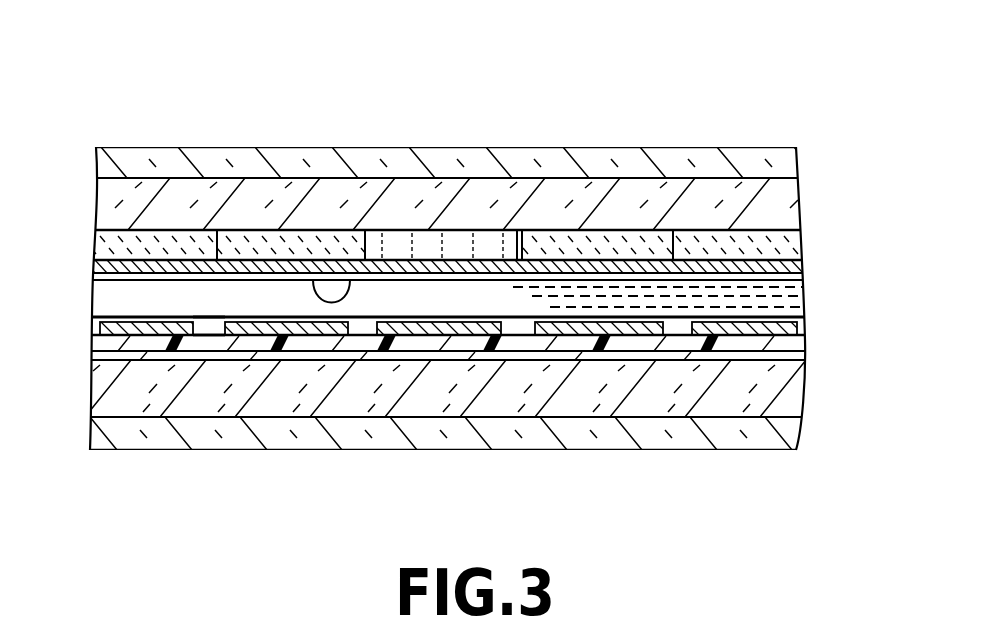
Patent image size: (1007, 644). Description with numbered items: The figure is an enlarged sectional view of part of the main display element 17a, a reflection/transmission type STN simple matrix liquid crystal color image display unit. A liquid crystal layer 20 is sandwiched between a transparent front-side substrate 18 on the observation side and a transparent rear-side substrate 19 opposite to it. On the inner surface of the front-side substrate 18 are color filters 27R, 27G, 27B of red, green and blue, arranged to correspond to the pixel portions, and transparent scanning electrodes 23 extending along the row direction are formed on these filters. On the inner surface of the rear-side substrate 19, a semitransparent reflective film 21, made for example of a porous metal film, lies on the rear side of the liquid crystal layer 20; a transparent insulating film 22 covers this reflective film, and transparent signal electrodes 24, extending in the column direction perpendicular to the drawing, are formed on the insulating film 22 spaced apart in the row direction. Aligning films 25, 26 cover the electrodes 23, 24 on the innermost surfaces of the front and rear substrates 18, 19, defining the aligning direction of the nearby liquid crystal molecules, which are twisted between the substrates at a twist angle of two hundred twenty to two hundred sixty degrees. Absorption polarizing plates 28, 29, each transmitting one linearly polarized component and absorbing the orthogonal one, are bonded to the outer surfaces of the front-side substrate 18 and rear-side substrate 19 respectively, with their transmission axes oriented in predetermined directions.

The main display element 17a is at (109, 135).
The front-side transparent substrate 18 is at (788, 207).
The rear-side transparent substrate 19 is at (790, 397).
The liquid crystal layer 20 is at (788, 300).
The semitransparent reflective film 21 is at (687, 357).
The transparent insulating film 22 is at (558, 345).
The transparent scanning electrodes 23 is at (547, 263).
The transparent signal electrodes 24 is at (323, 328).
The aligning film 25 is at (347, 275).
The aligning film 26 is at (208, 327).
The red color filter 27R is at (167, 237).
The green color filter 27G is at (260, 245).
The blue color filter 27B is at (452, 243).
The front-side polarizing plate 28 is at (787, 165).
The rear-side polarizing plate 29 is at (790, 433).